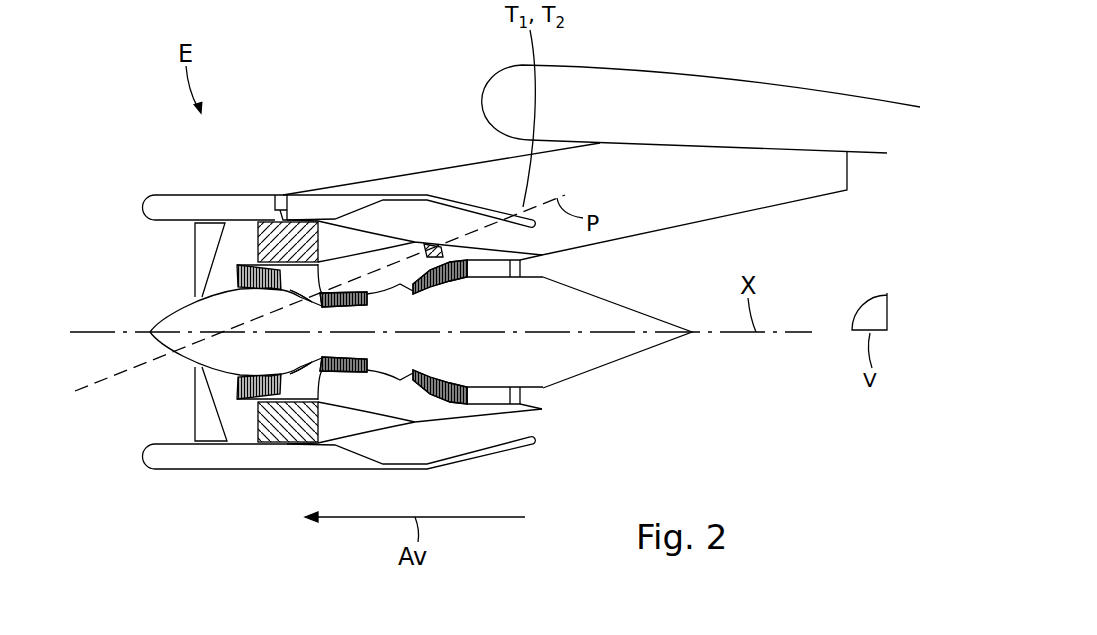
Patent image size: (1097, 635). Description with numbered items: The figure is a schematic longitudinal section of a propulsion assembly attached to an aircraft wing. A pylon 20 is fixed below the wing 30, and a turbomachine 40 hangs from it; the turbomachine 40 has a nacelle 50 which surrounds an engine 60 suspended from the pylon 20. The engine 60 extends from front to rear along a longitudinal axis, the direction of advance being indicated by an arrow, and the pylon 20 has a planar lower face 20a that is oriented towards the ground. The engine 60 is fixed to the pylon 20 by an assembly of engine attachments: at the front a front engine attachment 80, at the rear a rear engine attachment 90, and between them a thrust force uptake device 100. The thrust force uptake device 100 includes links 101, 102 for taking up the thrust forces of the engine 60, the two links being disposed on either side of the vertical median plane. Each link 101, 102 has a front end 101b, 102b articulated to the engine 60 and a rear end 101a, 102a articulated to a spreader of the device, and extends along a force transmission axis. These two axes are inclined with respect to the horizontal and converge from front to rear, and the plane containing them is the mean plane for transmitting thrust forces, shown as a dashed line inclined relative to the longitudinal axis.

The pylon 20 is at (773, 177).
The planar lower face 20a is at (376, 229).
The wing 30 is at (753, 104).
The turbomachine 40 is at (127, 170).
The nacelle 50 is at (192, 205).
The engine 60 is at (624, 350).
The front engine attachment 80 is at (283, 193).
The rear engine attachment 90 is at (512, 260).
The thrust force uptake device 100 is at (428, 245).
The link 101 is at (360, 288).
The link 102 is at (360, 288).
The rear end 101a is at (432, 290).
The rear end 102a is at (432, 290).
The front end 101b is at (302, 297).
The front end 102b is at (302, 297).